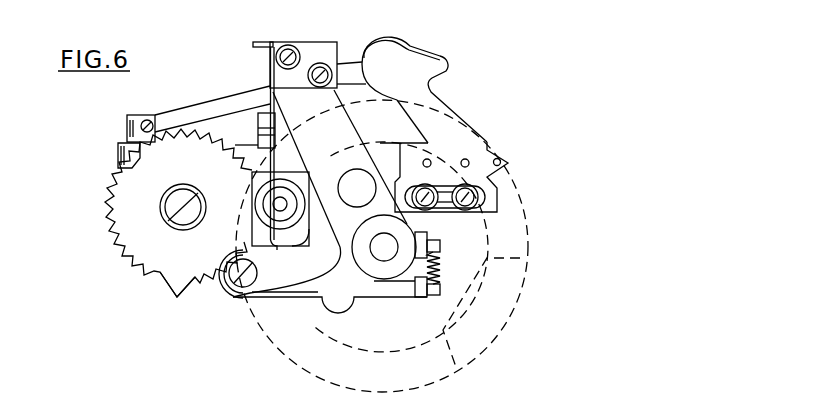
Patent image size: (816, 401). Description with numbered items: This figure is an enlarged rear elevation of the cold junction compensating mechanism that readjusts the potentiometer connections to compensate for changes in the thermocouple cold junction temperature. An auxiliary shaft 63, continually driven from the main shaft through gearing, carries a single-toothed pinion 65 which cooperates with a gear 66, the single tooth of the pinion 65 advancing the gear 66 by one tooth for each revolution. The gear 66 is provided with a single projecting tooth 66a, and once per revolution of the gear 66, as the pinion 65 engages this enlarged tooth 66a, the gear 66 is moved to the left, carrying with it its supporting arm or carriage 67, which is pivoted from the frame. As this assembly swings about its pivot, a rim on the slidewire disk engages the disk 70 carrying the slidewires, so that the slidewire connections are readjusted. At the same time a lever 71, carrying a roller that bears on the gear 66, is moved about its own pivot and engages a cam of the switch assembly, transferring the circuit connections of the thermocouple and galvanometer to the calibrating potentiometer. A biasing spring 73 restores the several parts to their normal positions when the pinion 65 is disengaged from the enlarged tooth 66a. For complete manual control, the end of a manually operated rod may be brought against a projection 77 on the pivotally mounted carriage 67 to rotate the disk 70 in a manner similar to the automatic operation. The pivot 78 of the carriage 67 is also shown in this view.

The auxiliary shaft 63 is at (283, 207).
The single-toothed pinion 65 is at (291, 225).
The gear 66 is at (137, 243).
The projecting tooth 66a is at (177, 298).
The supporting arm or carriage 67 is at (361, 284).
The disk 70 is at (512, 221).
The lever 71 is at (200, 110).
The biasing spring 73 is at (441, 266).
The projection 77 is at (403, 57).
The pivot 78 is at (385, 249).